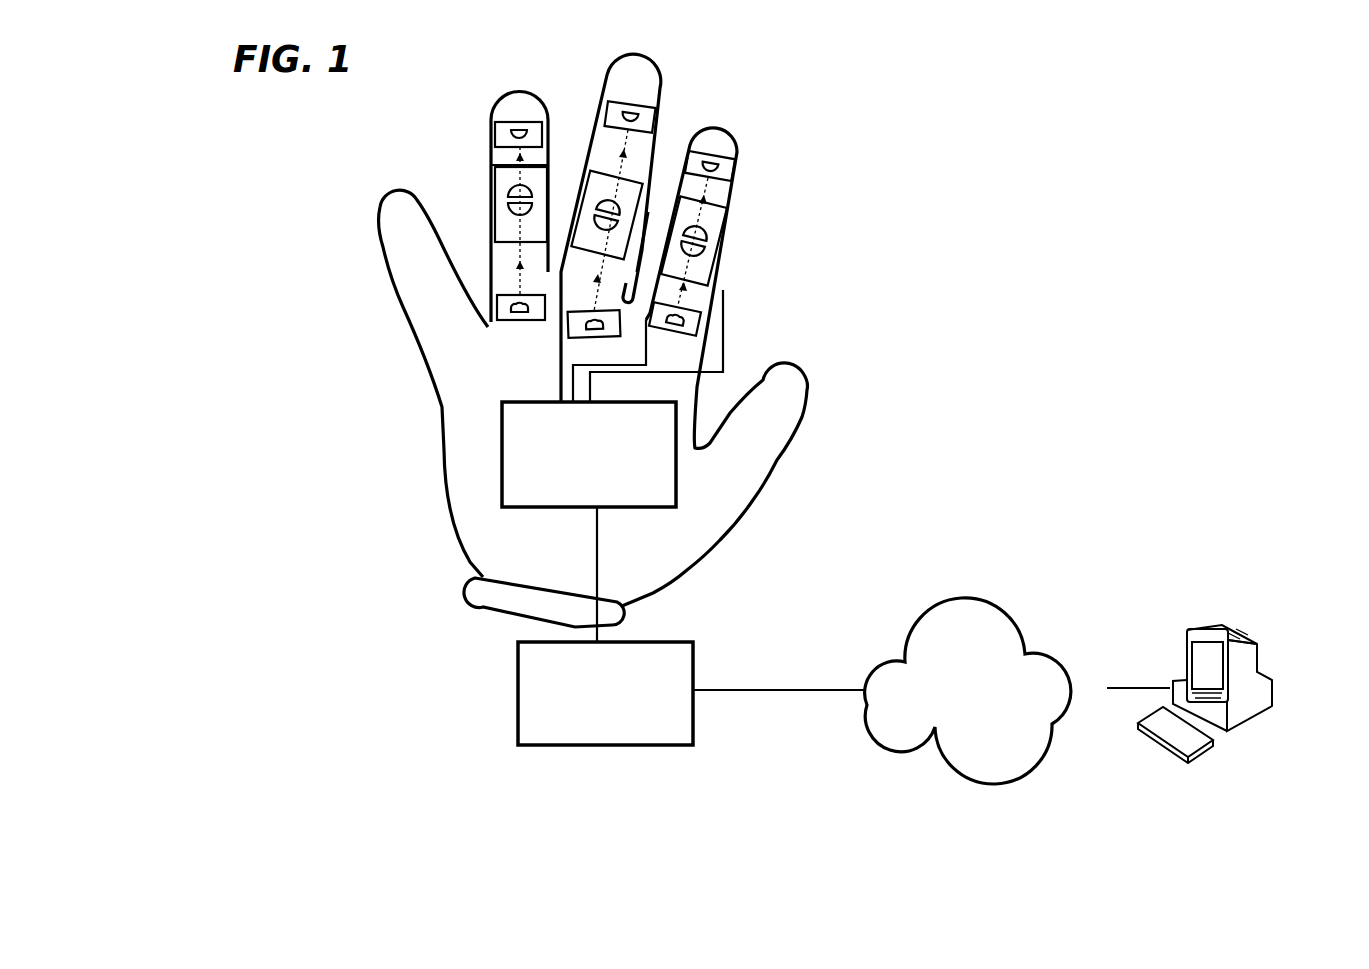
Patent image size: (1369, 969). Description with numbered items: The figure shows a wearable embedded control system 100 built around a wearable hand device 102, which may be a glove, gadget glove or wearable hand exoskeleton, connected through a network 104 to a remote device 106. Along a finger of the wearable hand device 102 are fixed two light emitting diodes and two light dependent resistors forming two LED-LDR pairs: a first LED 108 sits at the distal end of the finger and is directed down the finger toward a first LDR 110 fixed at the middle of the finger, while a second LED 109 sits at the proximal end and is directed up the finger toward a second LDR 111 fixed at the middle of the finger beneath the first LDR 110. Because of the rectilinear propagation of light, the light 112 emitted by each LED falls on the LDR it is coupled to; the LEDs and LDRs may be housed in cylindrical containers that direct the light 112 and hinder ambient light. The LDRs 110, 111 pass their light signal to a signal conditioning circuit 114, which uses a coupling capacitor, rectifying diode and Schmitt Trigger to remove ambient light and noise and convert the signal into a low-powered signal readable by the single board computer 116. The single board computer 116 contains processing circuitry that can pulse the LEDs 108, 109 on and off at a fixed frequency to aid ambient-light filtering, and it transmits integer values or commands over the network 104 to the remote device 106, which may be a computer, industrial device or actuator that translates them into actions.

The wearable embedded control system 100 is at (1178, 210).
The wearable hand device 102 is at (593, 340).
The network 104 is at (977, 625).
The remote device 106 is at (1227, 628).
The first light emitting diode 108 is at (712, 167).
The second light emitting diode 109 is at (690, 322).
The first light dependent resistor 110 is at (706, 229).
The second light dependent resistor 111 is at (705, 248).
The emitted light 112 is at (681, 292).
The signal conditioning circuit 114 is at (502, 455).
The single board computer 116 is at (518, 693).